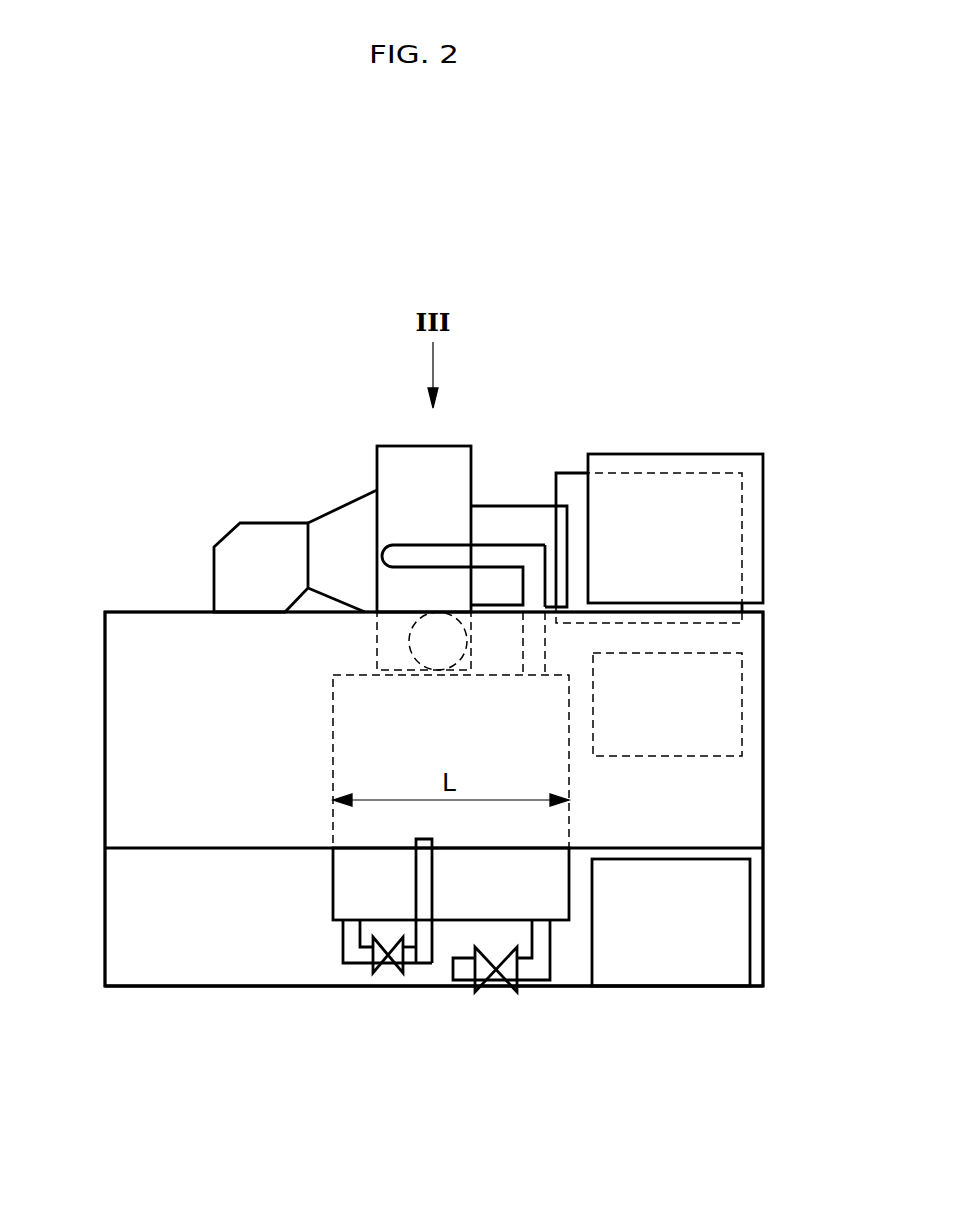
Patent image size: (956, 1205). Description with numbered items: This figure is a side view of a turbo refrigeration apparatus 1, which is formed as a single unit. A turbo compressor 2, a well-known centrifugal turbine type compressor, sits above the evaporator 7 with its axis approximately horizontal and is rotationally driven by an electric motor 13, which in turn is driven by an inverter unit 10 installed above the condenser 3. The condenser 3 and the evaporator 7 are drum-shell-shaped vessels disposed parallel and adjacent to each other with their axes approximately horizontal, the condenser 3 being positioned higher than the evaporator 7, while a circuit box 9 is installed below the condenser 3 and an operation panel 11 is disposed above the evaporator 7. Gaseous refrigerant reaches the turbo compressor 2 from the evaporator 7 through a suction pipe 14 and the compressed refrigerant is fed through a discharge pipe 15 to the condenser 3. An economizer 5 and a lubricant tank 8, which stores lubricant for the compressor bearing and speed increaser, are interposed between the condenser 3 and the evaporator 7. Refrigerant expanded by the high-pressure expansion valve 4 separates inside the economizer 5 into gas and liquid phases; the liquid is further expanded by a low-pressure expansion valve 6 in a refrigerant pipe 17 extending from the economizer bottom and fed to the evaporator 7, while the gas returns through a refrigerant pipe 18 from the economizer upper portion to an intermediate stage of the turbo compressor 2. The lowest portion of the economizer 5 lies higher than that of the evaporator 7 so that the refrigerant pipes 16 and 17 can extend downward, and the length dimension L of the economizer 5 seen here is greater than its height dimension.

The turbo refrigeration apparatus 1 is at (244, 270).
The turbo compressor 2 is at (391, 446).
The condenser 3 is at (149, 612).
The high-pressure expansion valve 4 is at (393, 976).
The economizer 5 is at (333, 752).
The low-pressure expansion valve 6 is at (498, 993).
The evaporator 7 is at (105, 910).
The lubricant tank 8 is at (742, 695).
The circuit box 9 is at (750, 918).
The inverter unit 10 is at (765, 517).
The operation panel 11 is at (661, 473).
The electric motor 13 is at (512, 505).
The suction pipe 14 is at (265, 522).
The discharge pipe 15 is at (408, 640).
The refrigerant pipe 16 is at (432, 878).
The refrigerant pipe 17 is at (553, 948).
The refrigerant pipe 18 is at (425, 545).